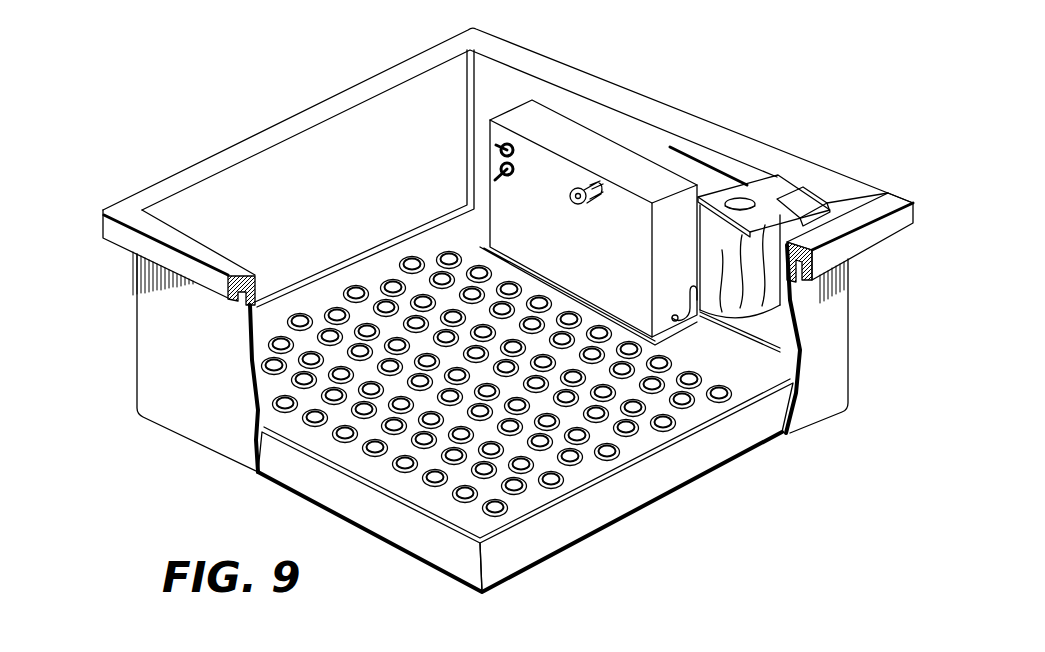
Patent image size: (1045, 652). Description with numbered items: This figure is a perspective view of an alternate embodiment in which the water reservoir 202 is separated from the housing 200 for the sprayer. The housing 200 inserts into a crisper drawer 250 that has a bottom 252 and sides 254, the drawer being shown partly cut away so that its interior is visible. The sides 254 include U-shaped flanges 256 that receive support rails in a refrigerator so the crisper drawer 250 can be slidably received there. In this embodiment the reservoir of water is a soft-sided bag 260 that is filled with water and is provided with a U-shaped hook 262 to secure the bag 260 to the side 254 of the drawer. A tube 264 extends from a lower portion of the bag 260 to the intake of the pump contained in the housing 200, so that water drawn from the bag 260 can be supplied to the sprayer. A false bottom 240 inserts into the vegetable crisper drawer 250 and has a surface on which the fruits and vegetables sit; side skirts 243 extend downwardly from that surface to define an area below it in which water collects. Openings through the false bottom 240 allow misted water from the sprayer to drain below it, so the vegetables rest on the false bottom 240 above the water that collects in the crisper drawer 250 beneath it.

The housing 200 is at (553, 132).
The water reservoir 202 is at (712, 197).
The false bottom 240 is at (643, 443).
The side skirts 243 is at (555, 522).
The crisper drawer 250 is at (327, 80).
The bottom 252 is at (396, 550).
The sides 254 is at (228, 187).
The U-shaped flanges 256 is at (133, 238).
The soft-sided bag 260 is at (785, 317).
The U-shaped hook 262 is at (778, 183).
The tube 264 is at (695, 312).